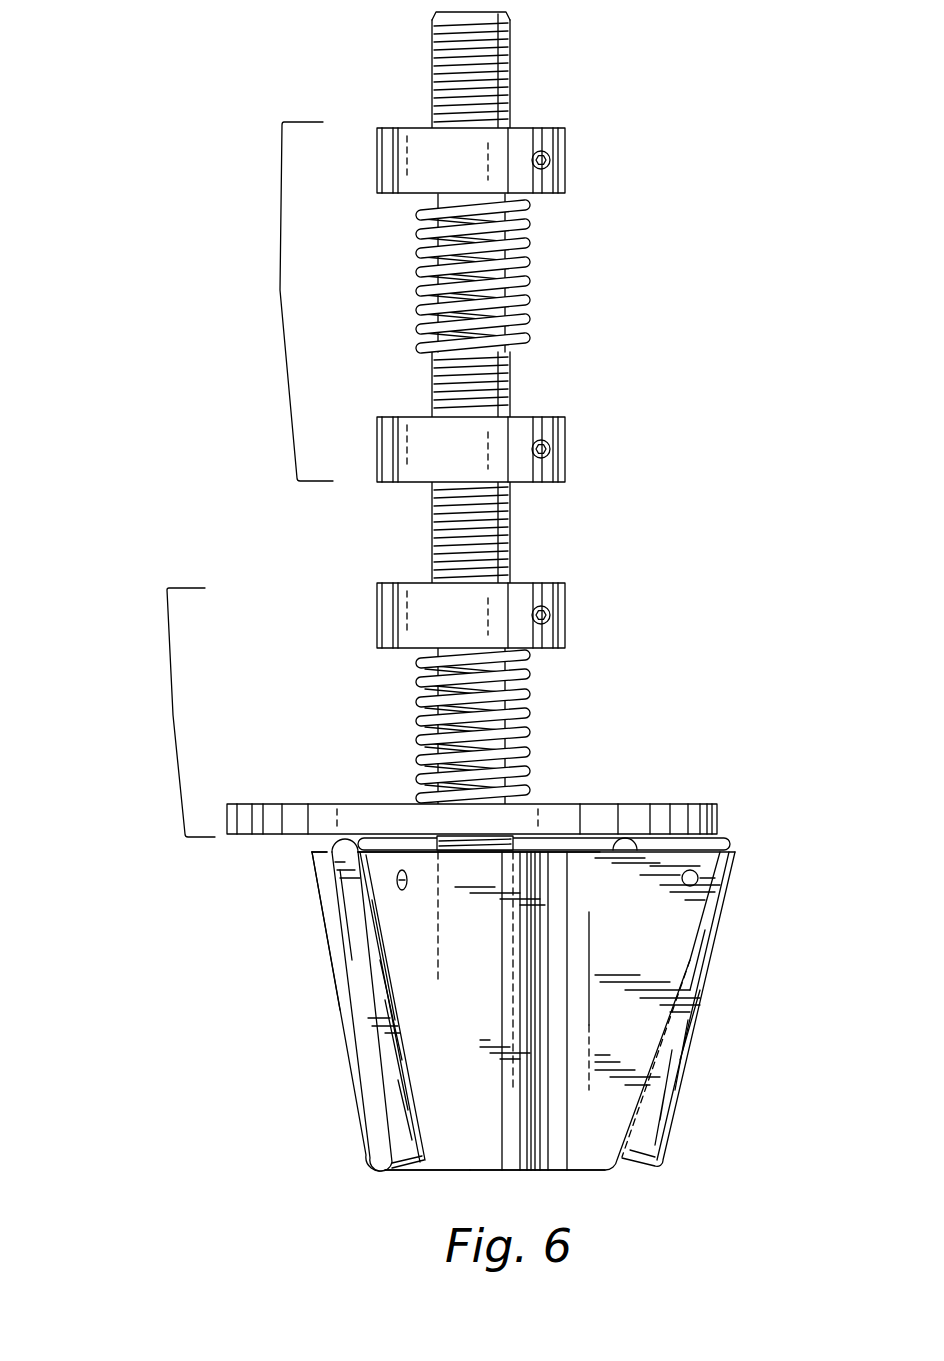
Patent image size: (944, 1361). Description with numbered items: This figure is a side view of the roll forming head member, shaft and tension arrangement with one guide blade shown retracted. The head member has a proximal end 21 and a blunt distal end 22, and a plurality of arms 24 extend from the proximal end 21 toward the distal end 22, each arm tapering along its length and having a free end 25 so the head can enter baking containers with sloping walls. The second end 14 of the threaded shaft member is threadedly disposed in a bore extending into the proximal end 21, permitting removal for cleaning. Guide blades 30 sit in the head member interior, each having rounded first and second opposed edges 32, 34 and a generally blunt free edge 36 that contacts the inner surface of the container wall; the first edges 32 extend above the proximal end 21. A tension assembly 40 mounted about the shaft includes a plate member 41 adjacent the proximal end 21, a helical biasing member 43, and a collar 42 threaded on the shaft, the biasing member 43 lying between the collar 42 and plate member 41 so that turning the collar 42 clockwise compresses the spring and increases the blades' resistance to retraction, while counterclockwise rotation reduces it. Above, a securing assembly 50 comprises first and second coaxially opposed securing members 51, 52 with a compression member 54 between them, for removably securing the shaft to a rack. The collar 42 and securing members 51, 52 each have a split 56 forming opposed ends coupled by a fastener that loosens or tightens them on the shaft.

The second end 14 is at (457, 982).
The proximal end 21 is at (317, 847).
The distal end 22 is at (407, 1172).
The arms 24 is at (473, 1172).
The free end 25 is at (323, 892).
The guide blades 30 is at (683, 1068).
The first edge 32 is at (725, 833).
The second edge 34 is at (643, 1170).
The free edge 36 is at (367, 1077).
The tension assembly 40 is at (173, 715).
The plate member 41 is at (282, 805).
The collar 42 is at (378, 610).
The biasing member 43 is at (531, 712).
The securing assembly 50 is at (280, 290).
The first securing member 51 is at (563, 128).
The second securing member 52 is at (563, 418).
The compression member 54 is at (533, 233).
The split 56 is at (550, 612).